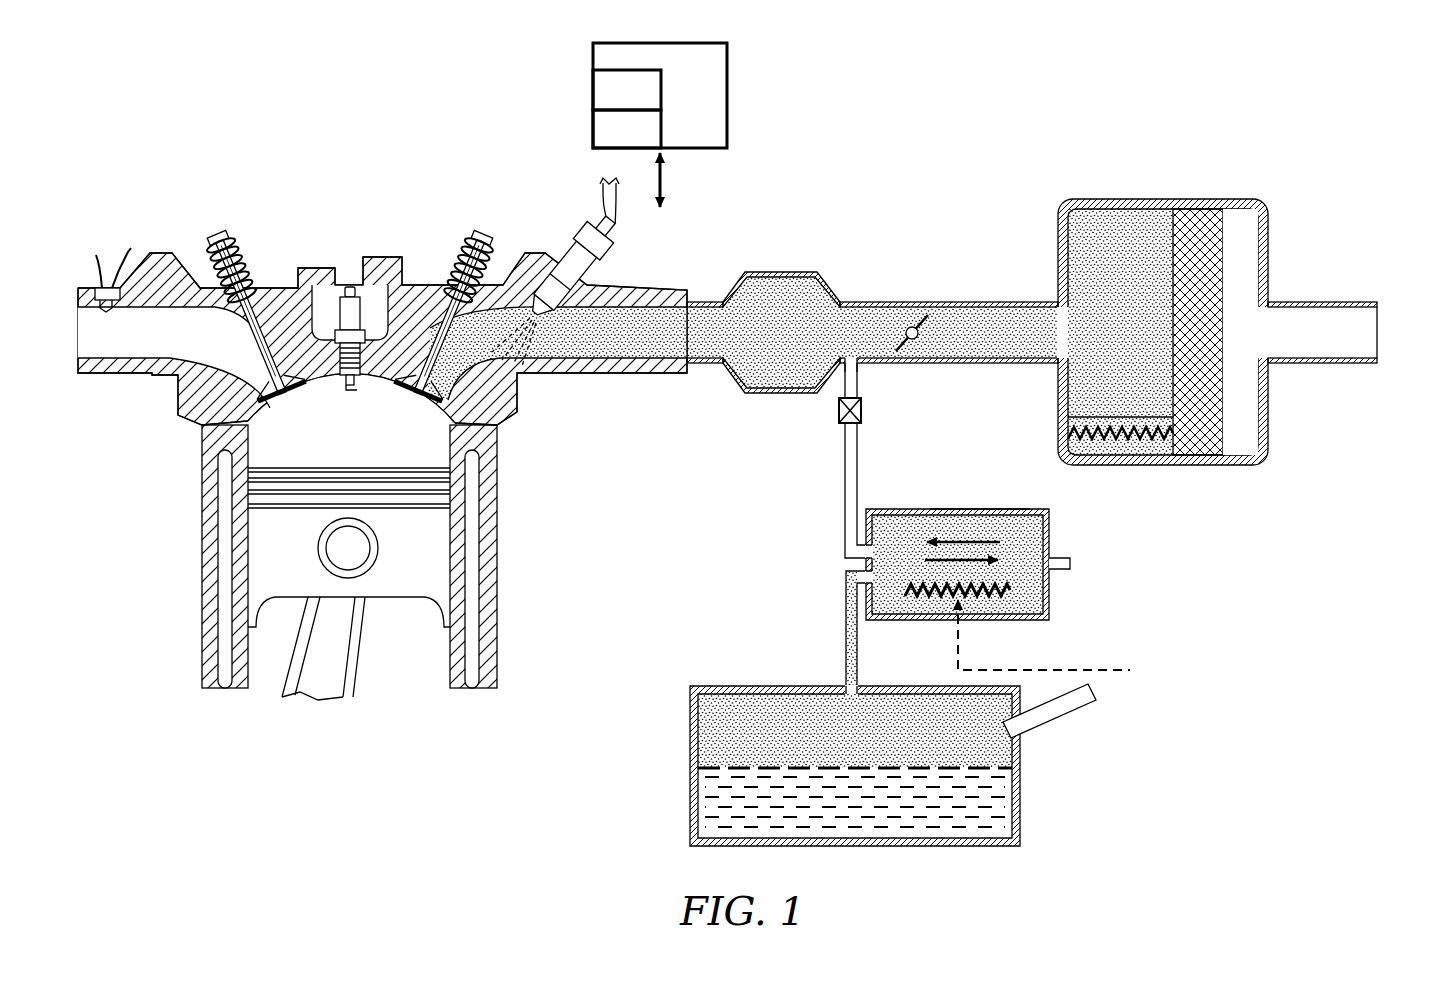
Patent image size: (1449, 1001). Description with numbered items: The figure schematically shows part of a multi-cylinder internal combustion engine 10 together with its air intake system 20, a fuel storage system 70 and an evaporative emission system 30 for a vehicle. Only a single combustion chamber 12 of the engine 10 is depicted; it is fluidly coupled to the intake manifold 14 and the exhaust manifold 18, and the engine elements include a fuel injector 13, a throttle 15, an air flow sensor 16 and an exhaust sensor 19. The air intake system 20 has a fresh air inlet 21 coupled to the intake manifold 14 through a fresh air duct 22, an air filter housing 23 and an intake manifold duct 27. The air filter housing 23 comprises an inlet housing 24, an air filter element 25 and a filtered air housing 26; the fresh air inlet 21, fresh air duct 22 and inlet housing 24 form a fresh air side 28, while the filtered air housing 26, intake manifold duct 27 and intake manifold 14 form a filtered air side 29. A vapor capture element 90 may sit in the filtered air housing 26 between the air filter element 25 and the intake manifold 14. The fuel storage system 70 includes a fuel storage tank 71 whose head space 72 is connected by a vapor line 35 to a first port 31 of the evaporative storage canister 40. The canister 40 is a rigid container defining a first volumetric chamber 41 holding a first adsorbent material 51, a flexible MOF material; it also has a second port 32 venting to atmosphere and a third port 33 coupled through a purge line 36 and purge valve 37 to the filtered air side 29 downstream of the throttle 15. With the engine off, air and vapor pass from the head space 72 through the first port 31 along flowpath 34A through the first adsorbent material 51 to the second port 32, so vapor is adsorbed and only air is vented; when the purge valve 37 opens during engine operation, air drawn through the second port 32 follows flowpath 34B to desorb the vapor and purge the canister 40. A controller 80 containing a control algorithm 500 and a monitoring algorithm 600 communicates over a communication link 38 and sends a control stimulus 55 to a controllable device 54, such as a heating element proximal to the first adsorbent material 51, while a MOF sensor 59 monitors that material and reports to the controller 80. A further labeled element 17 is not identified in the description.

The internal combustion engine 10 is at (350, 210).
The combustion chamber 12 is at (364, 432).
The fuel injector 13 is at (553, 257).
The intake manifold 14 is at (668, 286).
The throttle 15 is at (905, 326).
The air flow sensor 16 is at (790, 271).
The exhaust branch junction 17 is at (860, 362).
The exhaust manifold 18 is at (190, 335).
The exhaust sensor 19 is at (98, 288).
The air intake system 20 is at (1315, 224).
The fresh air inlet 21 is at (1367, 330).
The fresh air duct 22 is at (1345, 301).
The air filter housing 23 is at (1226, 467).
The inlet housing 24 is at (1243, 403).
The air filter element 25 is at (1197, 228).
The filtered air housing 26 is at (1100, 232).
The intake manifold duct 27 is at (700, 365).
The fresh air side 28 is at (1332, 344).
The filtered air side 29 is at (1085, 369).
The evaporative emission system 30 is at (745, 565).
The first port 31 is at (855, 578).
The second port 32 is at (1075, 565).
The third port 33 is at (862, 555).
The flowpath 34A is at (963, 540).
The flowpath 34B is at (940, 560).
The vapor line 35 is at (845, 628).
The purge line 36 is at (845, 500).
The purge valve 37 is at (838, 411).
The communication link 38 is at (665, 182).
The evaporative storage canister 40 is at (955, 536).
The first volumetric chamber 41 is at (980, 511).
The first adsorbent material 51 is at (1002, 528).
The controllable device 54 is at (910, 588).
The control stimulus 55 is at (1165, 681).
The MOF sensor 59 is at (1020, 600).
The fuel storage system 70 is at (860, 765).
The fuel storage tank 71 is at (1022, 810).
The head space 72 is at (715, 752).
The controller 80 is at (660, 95).
The vapor capture element 90 is at (1130, 410).
The evaporative emission system control algorithm 500 is at (648, 104).
The evaporative emission system monitoring algorithm 600 is at (648, 143).